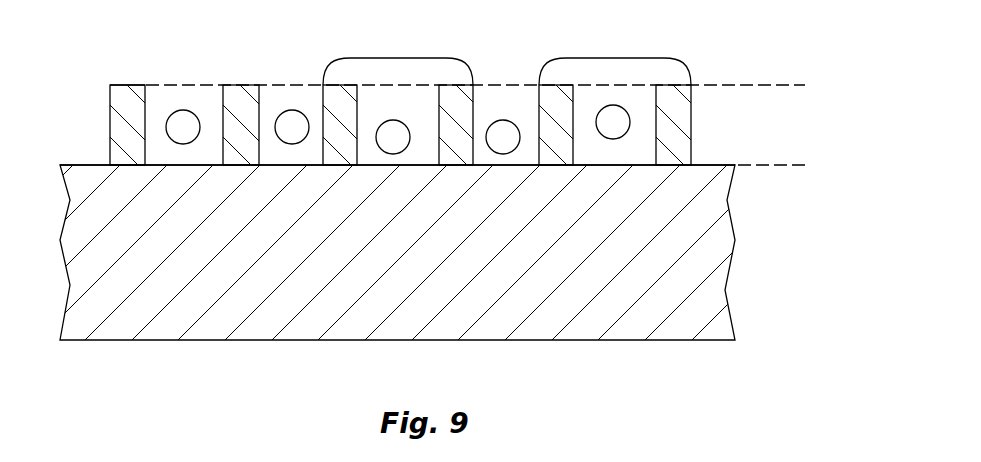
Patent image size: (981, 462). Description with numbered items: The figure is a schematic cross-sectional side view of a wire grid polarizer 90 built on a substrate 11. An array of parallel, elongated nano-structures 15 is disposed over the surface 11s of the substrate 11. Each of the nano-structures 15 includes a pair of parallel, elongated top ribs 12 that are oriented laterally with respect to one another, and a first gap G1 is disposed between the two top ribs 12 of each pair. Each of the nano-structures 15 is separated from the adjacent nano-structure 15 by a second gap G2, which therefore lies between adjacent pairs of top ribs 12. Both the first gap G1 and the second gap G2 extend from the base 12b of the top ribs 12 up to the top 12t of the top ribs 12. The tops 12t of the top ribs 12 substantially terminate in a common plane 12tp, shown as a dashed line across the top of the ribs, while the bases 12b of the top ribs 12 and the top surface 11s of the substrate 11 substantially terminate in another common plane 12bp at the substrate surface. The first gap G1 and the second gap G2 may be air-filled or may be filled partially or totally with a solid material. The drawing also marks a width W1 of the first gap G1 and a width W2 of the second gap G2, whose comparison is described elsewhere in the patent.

The substrate 11 is at (398, 291).
The surface of the substrate 11s is at (699, 165).
The top ribs 12 is at (682, 135).
The top of the top ribs 12t is at (128, 85).
The base of the top ribs 12b is at (107, 165).
The common plane 12tp is at (711, 85).
The common plane 12bp is at (790, 165).
The nano-structures 15 is at (432, 59).
The wire grid polarizer 90 is at (258, 42).
The first gap G1 is at (398, 129).
The second gap G2 is at (397, 132).
The width of the first gap W1 is at (359, 102).
The width of the second gap W2 is at (475, 102).